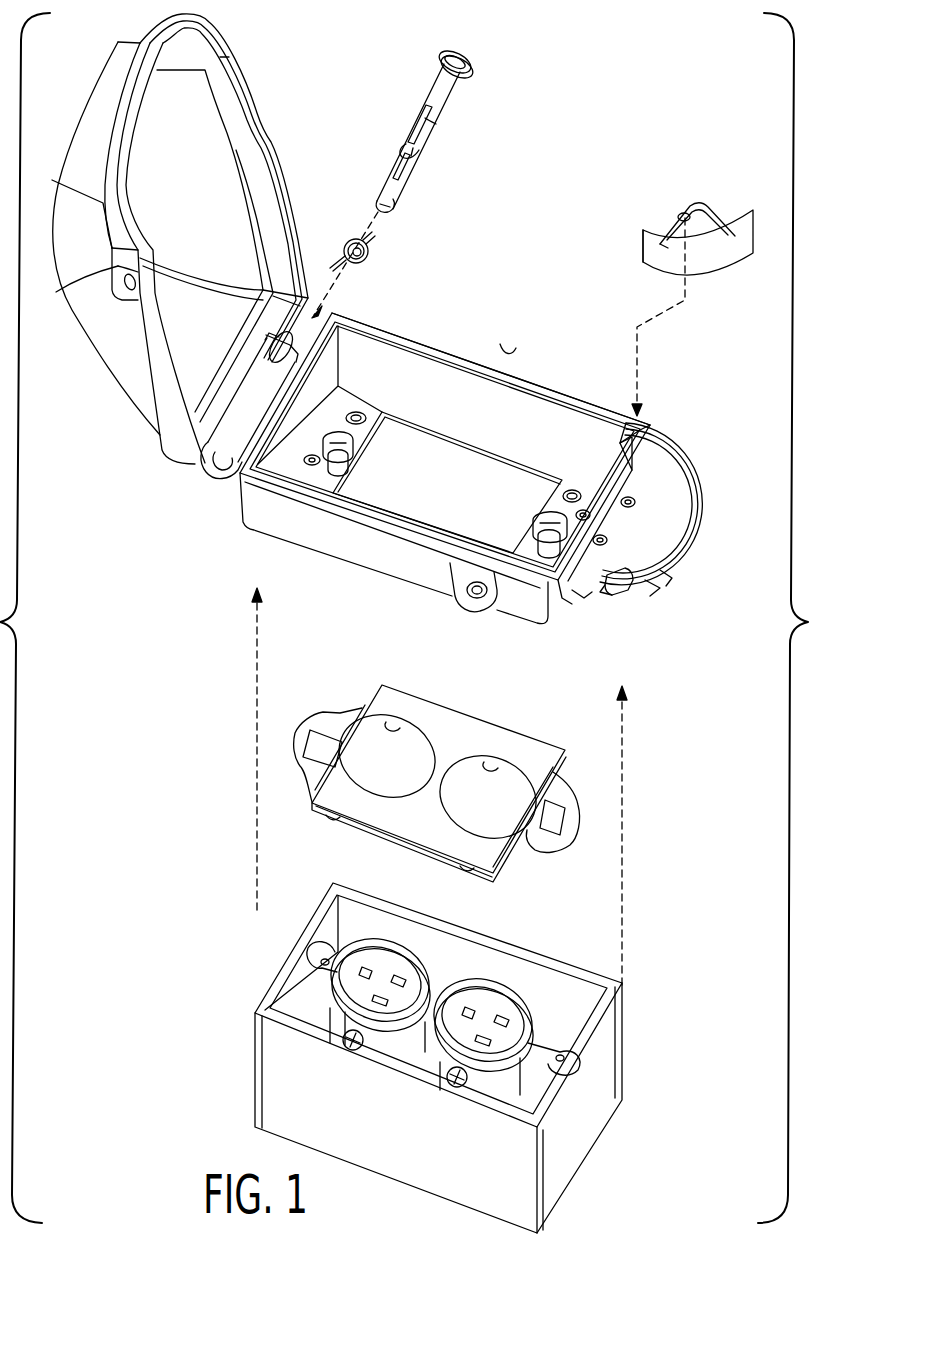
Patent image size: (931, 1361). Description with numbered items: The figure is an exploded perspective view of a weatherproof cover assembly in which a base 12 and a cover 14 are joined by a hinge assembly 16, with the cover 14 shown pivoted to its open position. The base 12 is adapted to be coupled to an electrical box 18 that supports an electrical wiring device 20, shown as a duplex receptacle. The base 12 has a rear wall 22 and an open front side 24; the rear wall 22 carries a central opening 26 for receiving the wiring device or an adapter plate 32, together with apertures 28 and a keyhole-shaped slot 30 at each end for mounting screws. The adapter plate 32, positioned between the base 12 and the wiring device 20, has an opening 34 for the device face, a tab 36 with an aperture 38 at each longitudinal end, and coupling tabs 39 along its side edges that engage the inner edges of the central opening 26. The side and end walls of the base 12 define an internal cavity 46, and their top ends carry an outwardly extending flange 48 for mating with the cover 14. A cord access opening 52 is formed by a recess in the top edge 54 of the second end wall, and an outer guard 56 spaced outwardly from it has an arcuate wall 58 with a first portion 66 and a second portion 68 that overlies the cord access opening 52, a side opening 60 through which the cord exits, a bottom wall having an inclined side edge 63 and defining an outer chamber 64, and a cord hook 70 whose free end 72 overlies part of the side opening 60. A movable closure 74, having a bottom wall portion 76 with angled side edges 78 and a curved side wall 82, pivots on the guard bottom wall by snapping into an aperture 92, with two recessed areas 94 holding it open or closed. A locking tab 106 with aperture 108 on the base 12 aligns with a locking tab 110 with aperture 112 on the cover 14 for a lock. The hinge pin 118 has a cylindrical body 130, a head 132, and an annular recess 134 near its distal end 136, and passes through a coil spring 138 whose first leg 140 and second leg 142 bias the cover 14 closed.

The base 12 is at (408, 472).
The cover 14 is at (80, 348).
The hinge assembly 16 is at (205, 478).
The electrical box 18 is at (395, 1058).
The electrical wiring device 20 is at (322, 996).
The rear wall 22 is at (340, 400).
The open front side 24 is at (517, 390).
The central opening 26 is at (442, 438).
The apertures 28 is at (367, 410).
The keyhole-shaped slot 30 is at (340, 470).
The adapter plate 32 is at (400, 781).
The opening 34 is at (400, 730).
The tab 36 is at (355, 712).
The aperture 38 is at (322, 748).
The coupling tabs 39 is at (305, 801).
The internal cavity 46 is at (438, 398).
The flange 48 is at (487, 367).
The cord access opening 52 is at (617, 465).
The top edge 54 is at (637, 438).
The outer guard 56 is at (642, 521).
The wall 58 is at (666, 486).
The side opening 60 is at (581, 596).
The side edge 63 is at (560, 602).
The outer chamber 64 is at (672, 572).
The first portion 66 is at (650, 460).
The second portion 68 is at (662, 580).
The cord hook 70 is at (628, 590).
The free end 72 is at (607, 595).
The movable closure 74 is at (708, 225).
The bottom wall portion 76 is at (683, 204).
The angled side edges 78 is at (670, 227).
The curved side wall 82 is at (728, 250).
The aperture 92 is at (638, 572).
The recessed areas 94 is at (632, 498).
The locking tab 106 is at (452, 582).
The aperture 108 is at (467, 594).
The locking tab 110 is at (56, 302).
The aperture 112 is at (105, 335).
The hinge pin 118 is at (451, 122).
The cylindrical body 130 is at (458, 104).
The head 132 is at (478, 72).
The annular recess 134 is at (400, 150).
The distal end 136 is at (392, 207).
The coil spring 138 is at (386, 238).
The first leg 140 is at (346, 250).
The second leg 142 is at (374, 236).